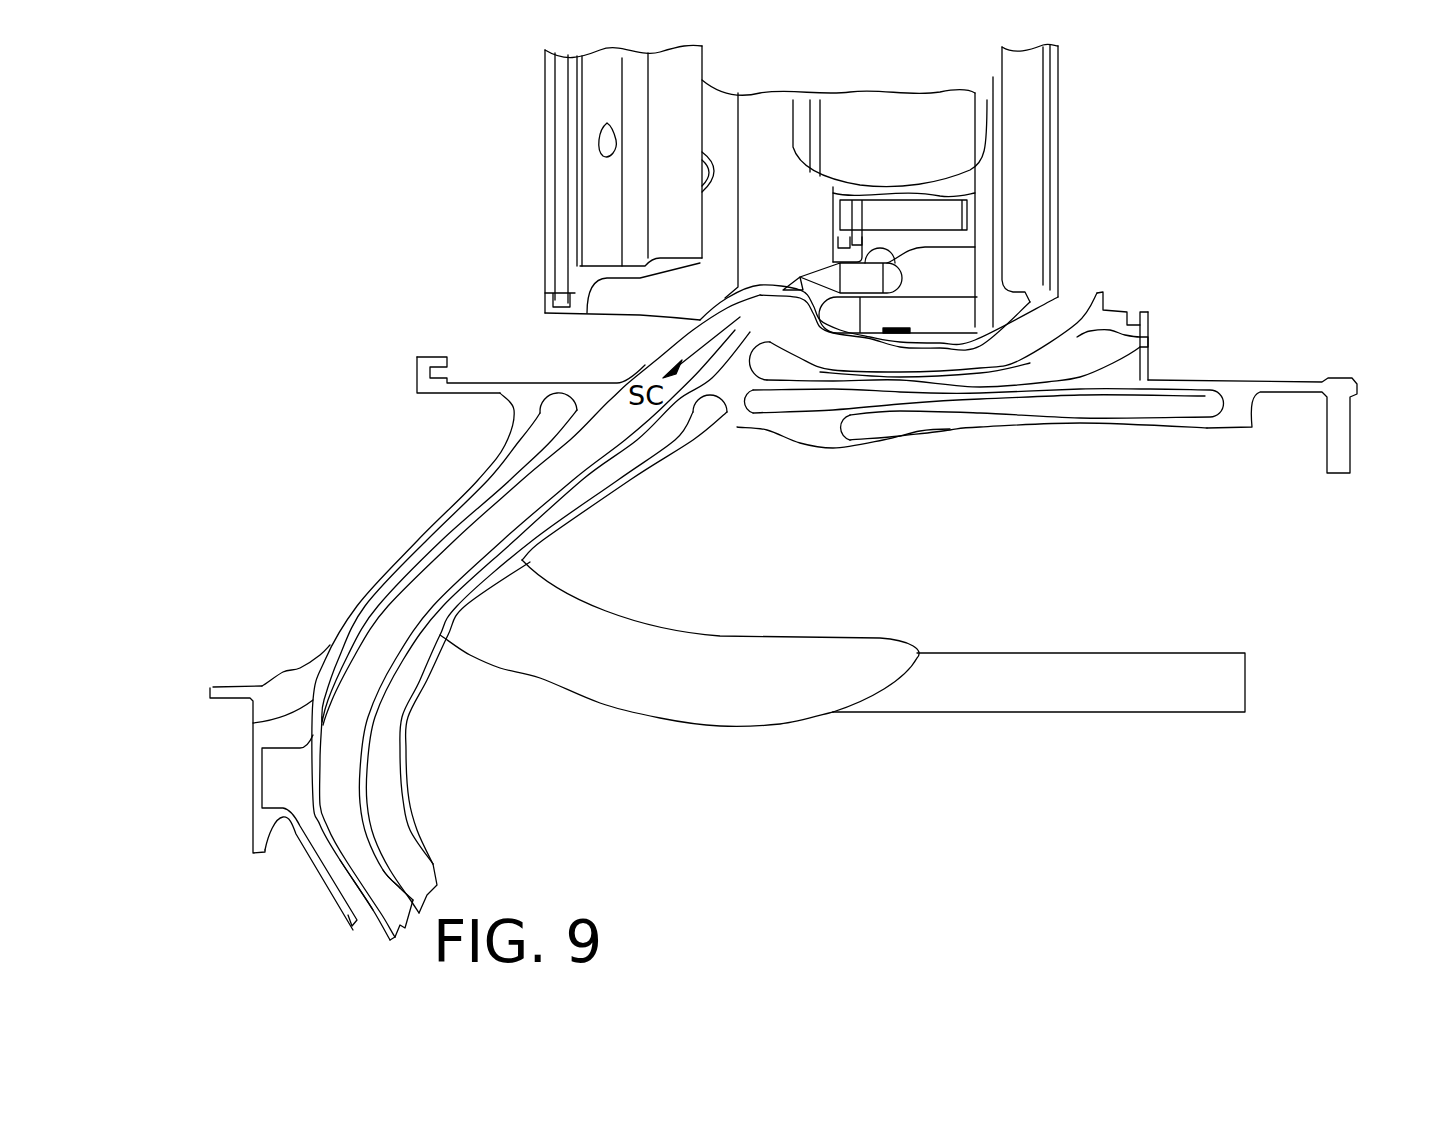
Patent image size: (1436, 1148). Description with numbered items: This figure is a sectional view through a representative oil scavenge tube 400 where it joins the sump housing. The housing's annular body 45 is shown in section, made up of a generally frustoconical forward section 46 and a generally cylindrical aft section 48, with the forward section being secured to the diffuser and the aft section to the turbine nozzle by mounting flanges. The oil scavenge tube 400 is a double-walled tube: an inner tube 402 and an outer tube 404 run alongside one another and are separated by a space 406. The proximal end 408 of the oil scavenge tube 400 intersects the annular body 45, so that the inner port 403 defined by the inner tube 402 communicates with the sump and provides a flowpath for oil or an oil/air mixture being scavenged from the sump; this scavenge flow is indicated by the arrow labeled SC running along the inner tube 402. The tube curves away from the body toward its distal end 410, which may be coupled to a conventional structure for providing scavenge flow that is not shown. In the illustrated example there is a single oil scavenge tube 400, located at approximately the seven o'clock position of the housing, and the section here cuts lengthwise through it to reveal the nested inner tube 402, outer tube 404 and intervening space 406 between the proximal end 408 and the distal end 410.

The annular body 45 is at (453, 392).
The forward section 46 is at (357, 572).
The aft section 48 is at (1077, 455).
The oil scavenge tube 400 is at (393, 666).
The inner tube 402 is at (553, 503).
The inner port 403 is at (898, 296).
The outer tube 404 is at (537, 543).
The space 406 is at (652, 452).
The proximal end 408 is at (727, 427).
The distal end 410 is at (417, 897).